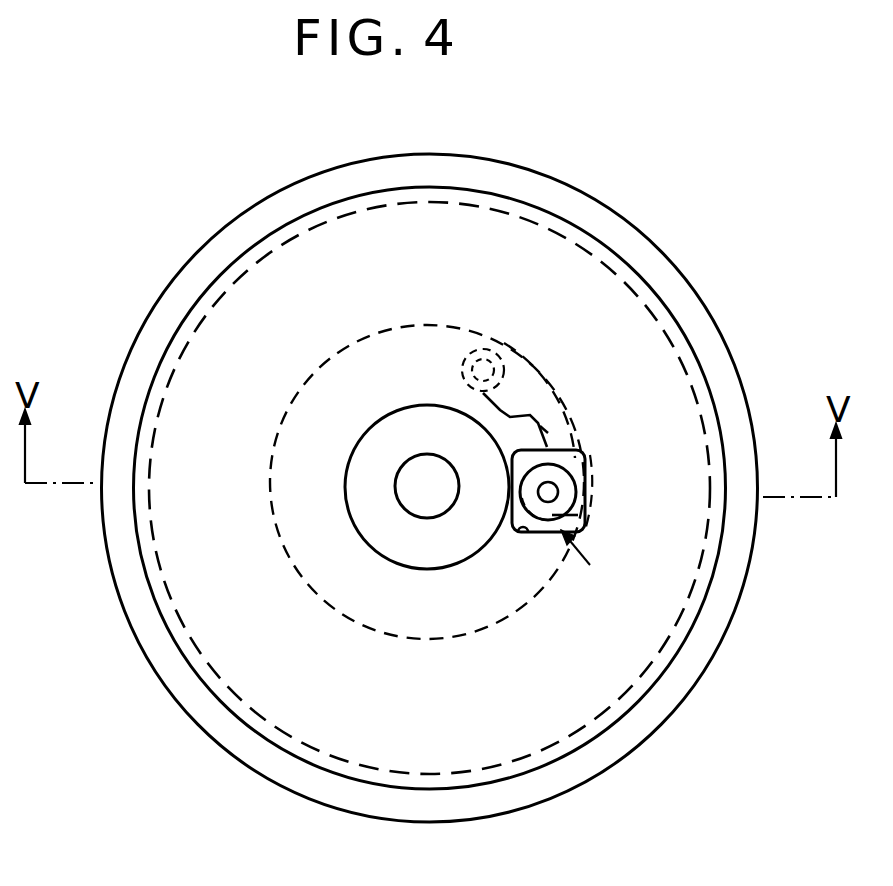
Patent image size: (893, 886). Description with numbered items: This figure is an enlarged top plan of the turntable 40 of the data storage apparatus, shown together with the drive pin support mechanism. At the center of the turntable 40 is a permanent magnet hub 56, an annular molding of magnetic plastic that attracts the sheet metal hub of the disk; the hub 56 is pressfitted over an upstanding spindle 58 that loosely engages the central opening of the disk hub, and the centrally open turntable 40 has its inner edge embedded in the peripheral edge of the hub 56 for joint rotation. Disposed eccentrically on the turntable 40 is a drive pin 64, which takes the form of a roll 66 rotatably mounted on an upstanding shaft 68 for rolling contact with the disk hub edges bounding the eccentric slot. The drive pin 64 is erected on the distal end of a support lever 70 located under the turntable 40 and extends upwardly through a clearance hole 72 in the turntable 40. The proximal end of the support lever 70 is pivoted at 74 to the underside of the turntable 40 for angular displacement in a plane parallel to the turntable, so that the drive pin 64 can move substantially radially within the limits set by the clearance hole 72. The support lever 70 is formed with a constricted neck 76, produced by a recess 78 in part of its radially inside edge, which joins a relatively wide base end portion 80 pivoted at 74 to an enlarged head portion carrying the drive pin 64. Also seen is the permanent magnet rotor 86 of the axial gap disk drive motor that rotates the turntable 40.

The turntable 40 is at (675, 600).
The permanent magnet hub 56 is at (372, 440).
The spindle 58 is at (412, 518).
The drive pin 64 is at (595, 561).
The roll 66 is at (588, 512).
The shaft 68 is at (548, 492).
The support lever 70 is at (546, 388).
The clearance hole 72 is at (523, 533).
The pivot 74 is at (495, 352).
The constricted neck 76 is at (571, 424).
The recess 78 is at (540, 426).
The base end portion 80 is at (483, 395).
The permanent magnet rotor 86 is at (685, 372).